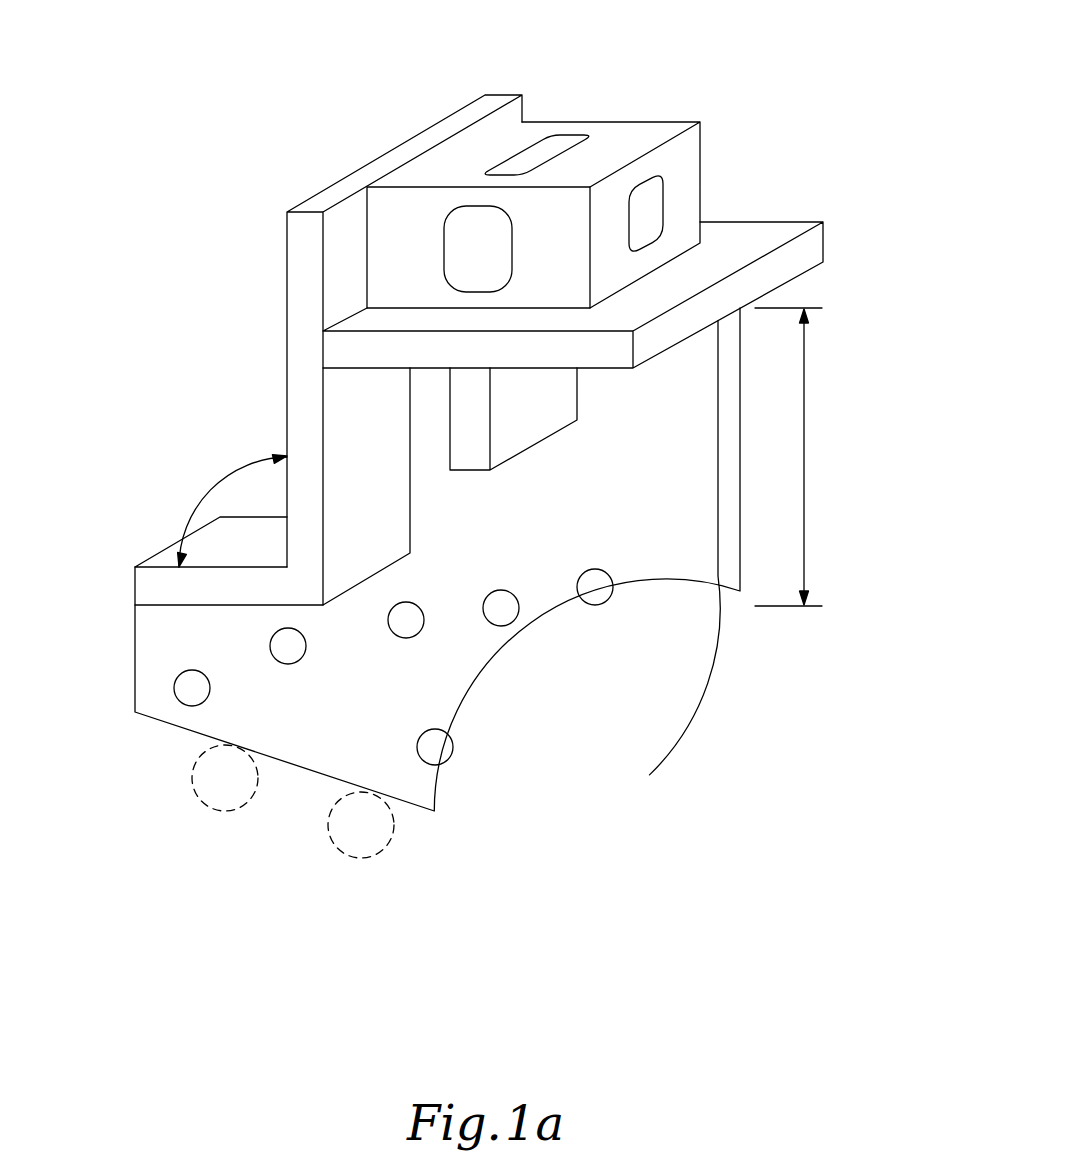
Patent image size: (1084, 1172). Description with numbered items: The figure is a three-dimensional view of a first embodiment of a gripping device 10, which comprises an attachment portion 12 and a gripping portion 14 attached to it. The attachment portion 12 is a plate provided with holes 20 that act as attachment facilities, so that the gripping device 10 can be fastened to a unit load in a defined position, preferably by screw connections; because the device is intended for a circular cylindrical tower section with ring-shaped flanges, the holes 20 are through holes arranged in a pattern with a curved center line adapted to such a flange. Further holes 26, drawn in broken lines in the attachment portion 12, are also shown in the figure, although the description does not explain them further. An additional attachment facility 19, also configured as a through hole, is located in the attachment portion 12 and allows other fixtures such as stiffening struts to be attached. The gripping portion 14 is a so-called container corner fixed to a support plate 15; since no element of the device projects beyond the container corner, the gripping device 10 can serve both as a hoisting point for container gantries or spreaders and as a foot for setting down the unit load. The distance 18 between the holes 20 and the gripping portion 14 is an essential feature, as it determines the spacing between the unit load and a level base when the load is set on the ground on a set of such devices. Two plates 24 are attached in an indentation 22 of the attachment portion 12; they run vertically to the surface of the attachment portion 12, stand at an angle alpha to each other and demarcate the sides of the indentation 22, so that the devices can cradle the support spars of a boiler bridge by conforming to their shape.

The gripping device 10 is at (878, 120).
The attachment portion 12 is at (536, 794).
The gripping portion 14 is at (630, 118).
The support plate 15 is at (813, 243).
The distance 18 is at (806, 453).
The additional attachment facility 19 is at (436, 753).
The holes 20 is at (189, 692).
The indentation 22 is at (199, 451).
The plates 24 is at (362, 402).
The optional holes 26 is at (212, 812).